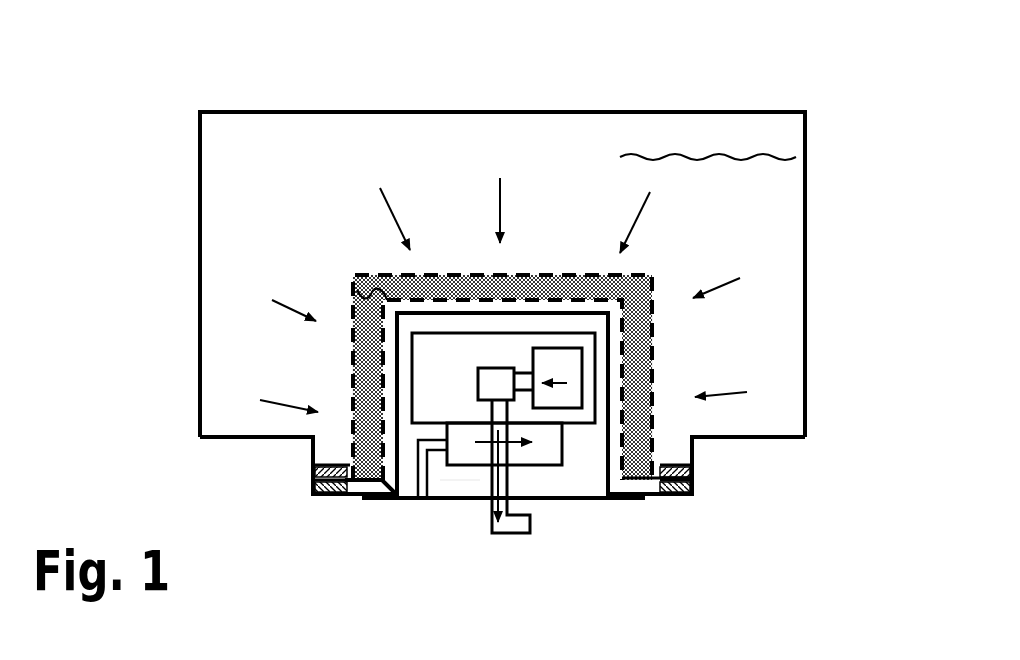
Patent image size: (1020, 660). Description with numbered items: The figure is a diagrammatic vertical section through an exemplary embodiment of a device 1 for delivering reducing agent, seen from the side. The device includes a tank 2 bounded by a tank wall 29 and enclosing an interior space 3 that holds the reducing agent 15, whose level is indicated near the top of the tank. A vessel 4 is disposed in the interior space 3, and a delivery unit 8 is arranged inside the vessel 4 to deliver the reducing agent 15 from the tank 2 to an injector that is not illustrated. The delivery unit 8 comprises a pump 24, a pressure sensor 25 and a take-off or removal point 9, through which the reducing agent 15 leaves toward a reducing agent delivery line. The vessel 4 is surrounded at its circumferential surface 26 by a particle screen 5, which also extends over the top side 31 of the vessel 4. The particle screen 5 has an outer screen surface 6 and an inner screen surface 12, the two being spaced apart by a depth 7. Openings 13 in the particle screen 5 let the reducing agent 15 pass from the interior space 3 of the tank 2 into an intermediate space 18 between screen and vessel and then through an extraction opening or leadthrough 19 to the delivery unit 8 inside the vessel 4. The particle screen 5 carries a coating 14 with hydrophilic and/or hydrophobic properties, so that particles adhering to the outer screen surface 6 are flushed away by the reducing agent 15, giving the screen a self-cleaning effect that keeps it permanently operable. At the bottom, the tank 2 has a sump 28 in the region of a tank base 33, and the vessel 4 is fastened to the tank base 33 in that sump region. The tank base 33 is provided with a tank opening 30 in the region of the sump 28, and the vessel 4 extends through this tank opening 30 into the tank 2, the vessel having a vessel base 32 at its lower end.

The device 1 is at (205, 78).
The tank 2 is at (200, 168).
The interior space 3 is at (302, 180).
The vessel 4 is at (608, 478).
The particle screen 5 is at (653, 316).
The outer screen surface 6 is at (352, 373).
The depth 7 is at (633, 382).
The delivery unit 8 is at (500, 336).
The removal point 9 is at (507, 537).
The inner screen surface 12 is at (582, 294).
The openings 13 is at (653, 398).
The coating 14 is at (353, 292).
The reducing agent 15 is at (722, 182).
The intermediate space 18 is at (357, 290).
The leadthrough 19 is at (418, 480).
The pump 24 is at (543, 452).
The pressure sensor 25 is at (545, 368).
The circumferential surface 26 is at (620, 358).
The sump 28 is at (332, 457).
The tank wall 29 is at (385, 112).
The tank opening 30 is at (347, 452).
The top side 31 is at (458, 310).
The vessel base 32 is at (463, 518).
The tank base 33 is at (198, 440).